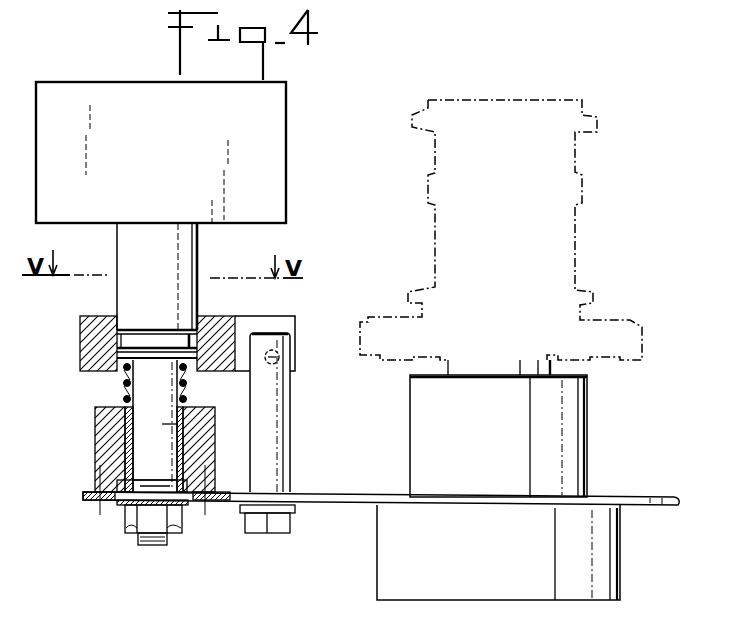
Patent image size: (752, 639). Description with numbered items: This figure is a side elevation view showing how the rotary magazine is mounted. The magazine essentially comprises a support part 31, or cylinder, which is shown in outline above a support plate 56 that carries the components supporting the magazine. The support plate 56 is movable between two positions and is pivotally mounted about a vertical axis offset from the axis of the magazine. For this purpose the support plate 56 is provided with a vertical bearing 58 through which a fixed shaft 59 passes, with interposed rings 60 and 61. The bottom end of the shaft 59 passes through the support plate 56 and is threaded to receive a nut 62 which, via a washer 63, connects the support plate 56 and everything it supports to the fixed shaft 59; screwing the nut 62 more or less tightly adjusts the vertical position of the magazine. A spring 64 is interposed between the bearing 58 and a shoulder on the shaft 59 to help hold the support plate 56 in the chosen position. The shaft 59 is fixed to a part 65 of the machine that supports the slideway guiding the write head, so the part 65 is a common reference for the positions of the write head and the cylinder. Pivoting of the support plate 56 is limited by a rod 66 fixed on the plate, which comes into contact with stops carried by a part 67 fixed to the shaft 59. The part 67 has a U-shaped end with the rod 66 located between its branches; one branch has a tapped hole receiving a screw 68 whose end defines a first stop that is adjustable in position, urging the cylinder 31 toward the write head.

The support part 31 is at (535, 265).
The support plate 56 is at (345, 496).
The vertical bearing 58 is at (100, 423).
The fixed shaft 59 is at (183, 418).
The ring 60 is at (125, 435).
The ring 61 is at (125, 470).
The nut 62 is at (175, 525).
The washer 63 is at (128, 506).
The spring 64 is at (122, 388).
The part of the machine 65 is at (278, 157).
The rod 66 is at (284, 430).
The part 67 is at (80, 332).
The screw 68 is at (289, 353).